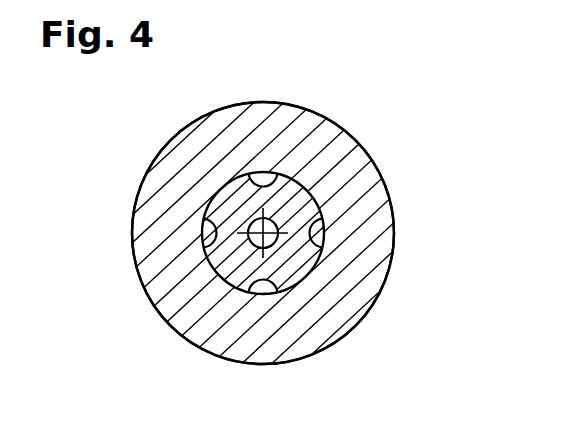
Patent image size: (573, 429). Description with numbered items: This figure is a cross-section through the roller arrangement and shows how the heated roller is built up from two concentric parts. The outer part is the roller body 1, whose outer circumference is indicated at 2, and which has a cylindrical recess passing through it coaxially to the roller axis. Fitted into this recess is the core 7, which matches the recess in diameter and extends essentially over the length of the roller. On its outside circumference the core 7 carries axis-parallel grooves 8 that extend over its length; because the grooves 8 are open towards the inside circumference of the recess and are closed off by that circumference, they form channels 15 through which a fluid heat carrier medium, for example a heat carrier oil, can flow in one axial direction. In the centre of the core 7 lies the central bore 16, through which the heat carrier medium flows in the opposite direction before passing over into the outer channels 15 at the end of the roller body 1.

The roller body 1 is at (142, 251).
The outer circumferential surface 2 is at (141, 184).
The core 7 is at (291, 196).
The grooves 8 is at (318, 237).
The channels 15 is at (260, 182).
The central bore 16 is at (270, 227).